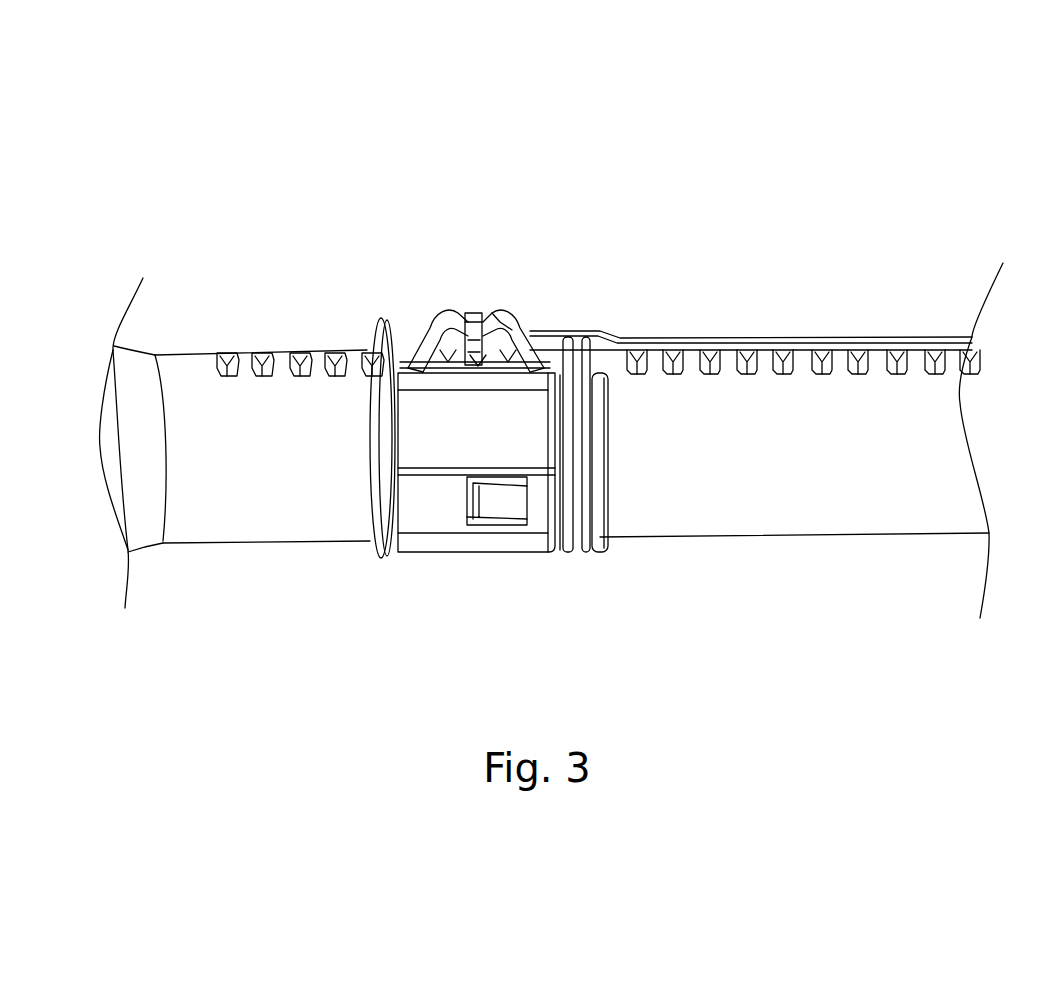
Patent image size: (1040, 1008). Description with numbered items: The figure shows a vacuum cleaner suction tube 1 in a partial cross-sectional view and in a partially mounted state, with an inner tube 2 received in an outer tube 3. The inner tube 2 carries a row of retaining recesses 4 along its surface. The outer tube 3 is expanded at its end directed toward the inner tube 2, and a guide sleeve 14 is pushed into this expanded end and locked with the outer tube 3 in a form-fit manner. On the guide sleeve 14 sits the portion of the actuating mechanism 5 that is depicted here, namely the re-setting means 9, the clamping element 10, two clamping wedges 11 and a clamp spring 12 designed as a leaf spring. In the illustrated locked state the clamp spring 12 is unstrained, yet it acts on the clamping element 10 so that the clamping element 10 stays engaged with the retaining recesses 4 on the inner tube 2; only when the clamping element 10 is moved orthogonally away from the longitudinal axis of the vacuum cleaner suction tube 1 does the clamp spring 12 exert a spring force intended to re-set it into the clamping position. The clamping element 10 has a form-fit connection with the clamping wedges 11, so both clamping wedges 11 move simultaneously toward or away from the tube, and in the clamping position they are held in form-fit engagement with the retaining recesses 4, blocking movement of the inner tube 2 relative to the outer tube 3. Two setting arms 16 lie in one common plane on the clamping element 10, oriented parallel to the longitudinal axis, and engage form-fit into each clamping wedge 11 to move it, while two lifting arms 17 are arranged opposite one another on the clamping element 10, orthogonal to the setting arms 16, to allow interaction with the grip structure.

The vacuum cleaner suction tube 1 is at (256, 609).
The inner tube 2 is at (183, 368).
The outer tube 3 is at (752, 350).
The retaining recesses 4 is at (296, 353).
The actuating mechanism 5 is at (464, 286).
The re-setting means 9 is at (562, 552).
The clamping element 10 is at (478, 337).
The clamping wedges 11 is at (428, 345).
The clamp spring 12 is at (508, 315).
The guide sleeve 14 is at (438, 507).
The setting arms 16 is at (452, 370).
The lifting arms 17 is at (485, 362).